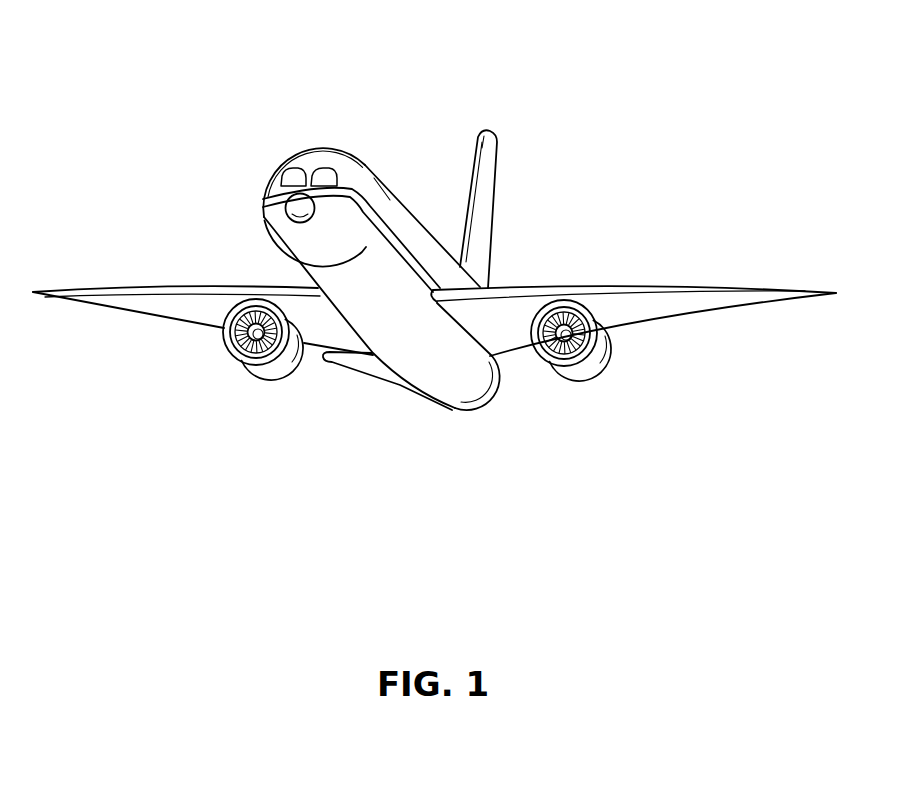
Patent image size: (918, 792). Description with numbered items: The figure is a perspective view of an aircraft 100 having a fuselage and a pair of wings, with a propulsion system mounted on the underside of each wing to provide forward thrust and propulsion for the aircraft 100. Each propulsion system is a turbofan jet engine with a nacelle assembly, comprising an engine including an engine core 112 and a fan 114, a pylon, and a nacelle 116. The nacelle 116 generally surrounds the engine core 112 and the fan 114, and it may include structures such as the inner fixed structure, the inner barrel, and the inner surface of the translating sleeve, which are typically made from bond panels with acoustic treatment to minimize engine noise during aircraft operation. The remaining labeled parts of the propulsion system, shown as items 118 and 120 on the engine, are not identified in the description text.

The aircraft 100 is at (174, 115).
The engine core 112 is at (391, 213).
The fan 114 is at (153, 284).
The nacelle 116 is at (278, 358).
The engine inlet 118 is at (238, 352).
The nacelle 120 is at (272, 370).